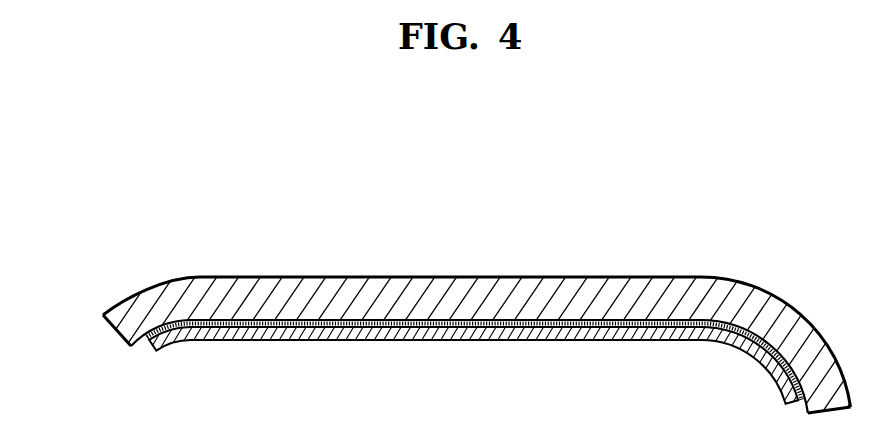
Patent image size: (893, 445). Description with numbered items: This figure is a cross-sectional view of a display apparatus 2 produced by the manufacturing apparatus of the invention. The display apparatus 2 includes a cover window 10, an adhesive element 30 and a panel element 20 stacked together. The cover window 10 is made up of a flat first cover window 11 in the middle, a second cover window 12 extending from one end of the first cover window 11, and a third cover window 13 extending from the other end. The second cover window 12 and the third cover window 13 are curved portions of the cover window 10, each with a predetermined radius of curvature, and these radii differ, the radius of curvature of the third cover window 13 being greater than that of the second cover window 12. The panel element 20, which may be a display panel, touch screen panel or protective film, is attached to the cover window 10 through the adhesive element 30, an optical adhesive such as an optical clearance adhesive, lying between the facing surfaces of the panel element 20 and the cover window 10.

The display apparatus 2 is at (93, 195).
The cover window 10 is at (793, 213).
The first cover window 11 is at (493, 290).
The second cover window 12 is at (142, 305).
The third cover window 13 is at (800, 310).
The panel element 20 is at (608, 334).
The adhesive element 30 is at (668, 325).